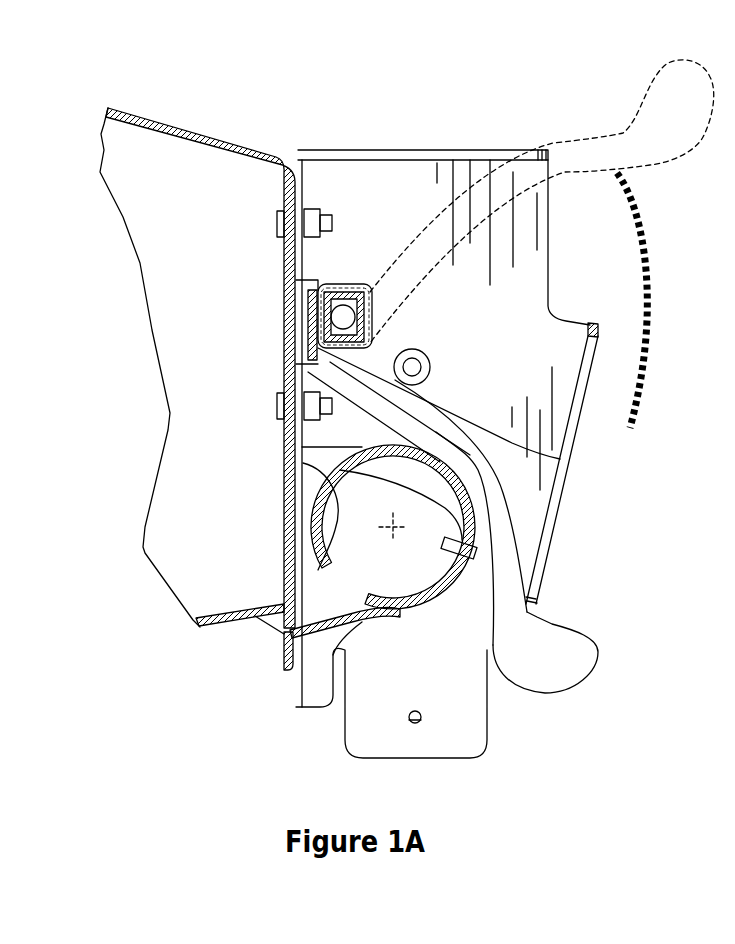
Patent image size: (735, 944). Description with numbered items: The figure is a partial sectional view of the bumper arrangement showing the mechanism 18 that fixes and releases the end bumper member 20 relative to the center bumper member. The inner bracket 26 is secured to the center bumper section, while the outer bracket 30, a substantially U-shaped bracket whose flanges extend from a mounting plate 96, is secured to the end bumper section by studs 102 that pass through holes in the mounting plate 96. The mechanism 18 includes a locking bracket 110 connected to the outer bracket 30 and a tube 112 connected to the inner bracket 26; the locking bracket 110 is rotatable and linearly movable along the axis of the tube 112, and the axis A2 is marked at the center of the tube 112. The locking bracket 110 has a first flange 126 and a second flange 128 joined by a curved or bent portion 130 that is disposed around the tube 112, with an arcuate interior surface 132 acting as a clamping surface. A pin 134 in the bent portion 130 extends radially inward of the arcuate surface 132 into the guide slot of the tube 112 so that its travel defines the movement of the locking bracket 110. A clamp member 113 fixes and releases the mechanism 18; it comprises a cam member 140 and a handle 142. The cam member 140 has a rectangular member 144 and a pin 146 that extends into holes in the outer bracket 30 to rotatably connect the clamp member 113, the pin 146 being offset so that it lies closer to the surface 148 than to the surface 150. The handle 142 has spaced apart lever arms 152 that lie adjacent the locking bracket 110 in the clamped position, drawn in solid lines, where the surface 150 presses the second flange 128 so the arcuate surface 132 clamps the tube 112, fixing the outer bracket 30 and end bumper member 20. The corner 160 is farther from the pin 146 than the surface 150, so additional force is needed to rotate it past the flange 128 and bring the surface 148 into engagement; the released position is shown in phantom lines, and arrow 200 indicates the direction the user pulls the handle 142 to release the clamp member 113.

The mechanism 18 is at (441, 619).
The end bumper member 20 is at (220, 590).
The inner bracket 26 is at (393, 175).
The outer bracket 30 is at (306, 194).
The mounting plate 96 is at (292, 312).
The studs 102 is at (330, 222).
The locking bracket 110 is at (390, 610).
The tube 112 is at (318, 572).
The clamp member 113 is at (400, 352).
The first flange 126 is at (283, 657).
The second flange 128 is at (318, 320).
The curved or bent portion 130 is at (475, 490).
The arcuate interior surface 132 is at (323, 447).
The pin 134 is at (445, 553).
The cam member 140 is at (410, 388).
The handle 142 is at (476, 462).
The rectangular member 144 is at (308, 372).
The pin 146 is at (372, 318).
The surface 148 is at (337, 285).
The surface 150 is at (306, 300).
The lever arms 152 is at (500, 581).
The corner 160 is at (296, 268).
The arrow 200 is at (650, 290).
The axis A2 is at (386, 520).